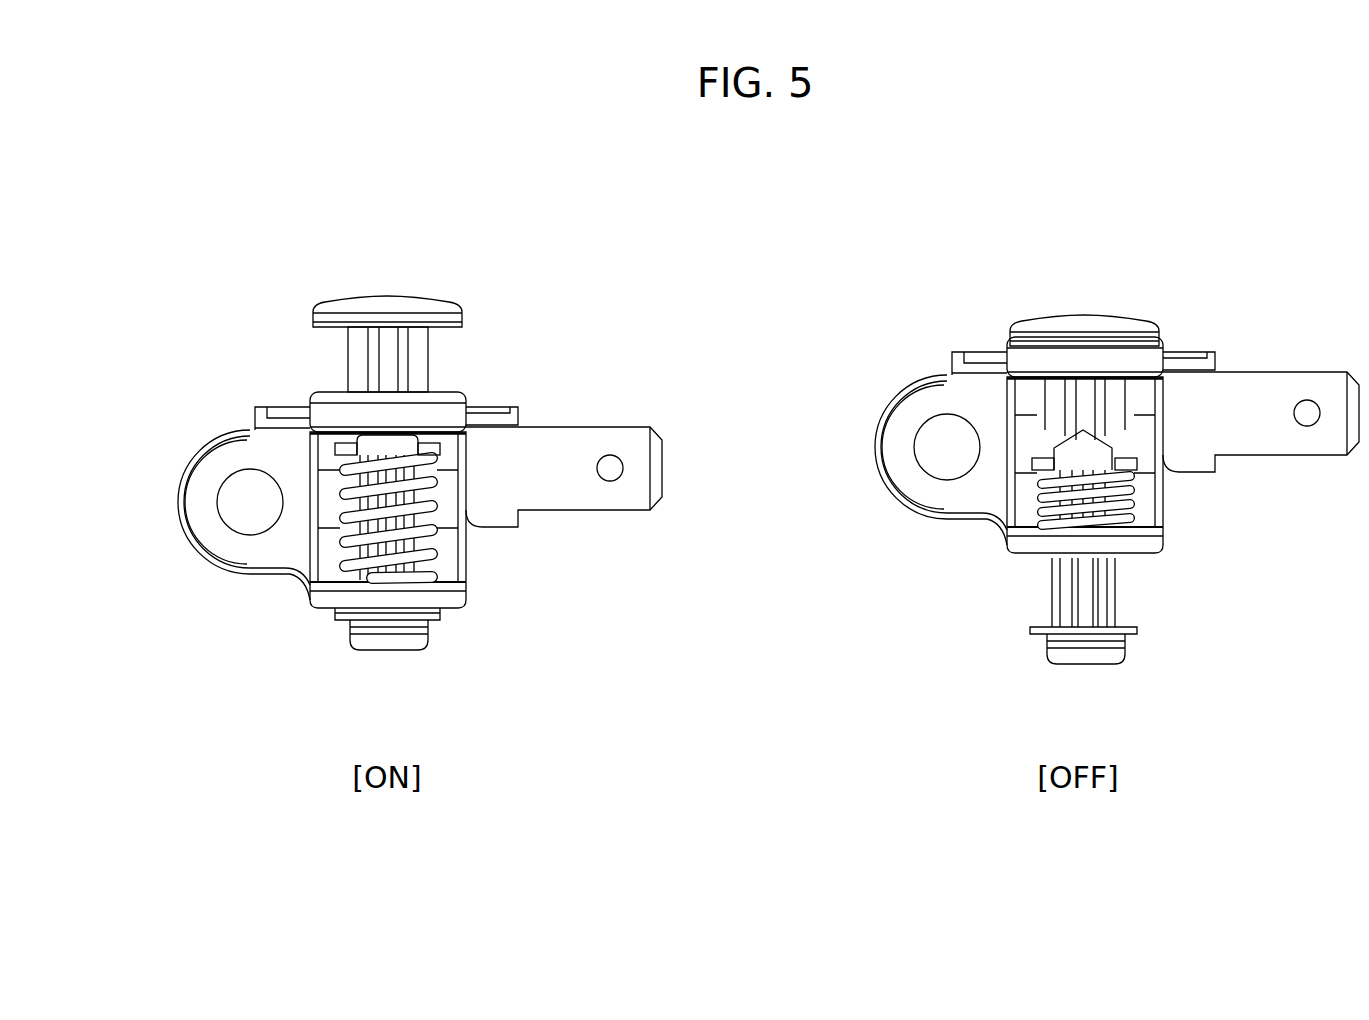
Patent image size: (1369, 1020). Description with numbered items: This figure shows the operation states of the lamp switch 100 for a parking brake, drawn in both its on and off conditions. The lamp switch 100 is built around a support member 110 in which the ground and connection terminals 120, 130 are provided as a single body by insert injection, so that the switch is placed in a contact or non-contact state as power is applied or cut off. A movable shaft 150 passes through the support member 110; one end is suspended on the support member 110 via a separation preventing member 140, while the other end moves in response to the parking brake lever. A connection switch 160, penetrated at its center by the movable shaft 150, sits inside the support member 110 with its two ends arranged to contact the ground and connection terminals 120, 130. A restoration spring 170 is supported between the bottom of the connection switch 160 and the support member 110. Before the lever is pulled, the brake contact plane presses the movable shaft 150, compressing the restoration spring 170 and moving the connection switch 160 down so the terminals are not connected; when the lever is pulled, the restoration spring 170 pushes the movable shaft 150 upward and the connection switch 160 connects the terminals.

The lamp switch 100 is at (392, 429).
The support member 110 is at (450, 389).
The ground terminal 120 is at (213, 446).
The connection terminal 130 is at (570, 423).
The separation preventing member 140 is at (418, 646).
The movable shaft 150 is at (346, 350).
The connection switch 160 is at (434, 460).
The restoration spring 170 is at (340, 567).